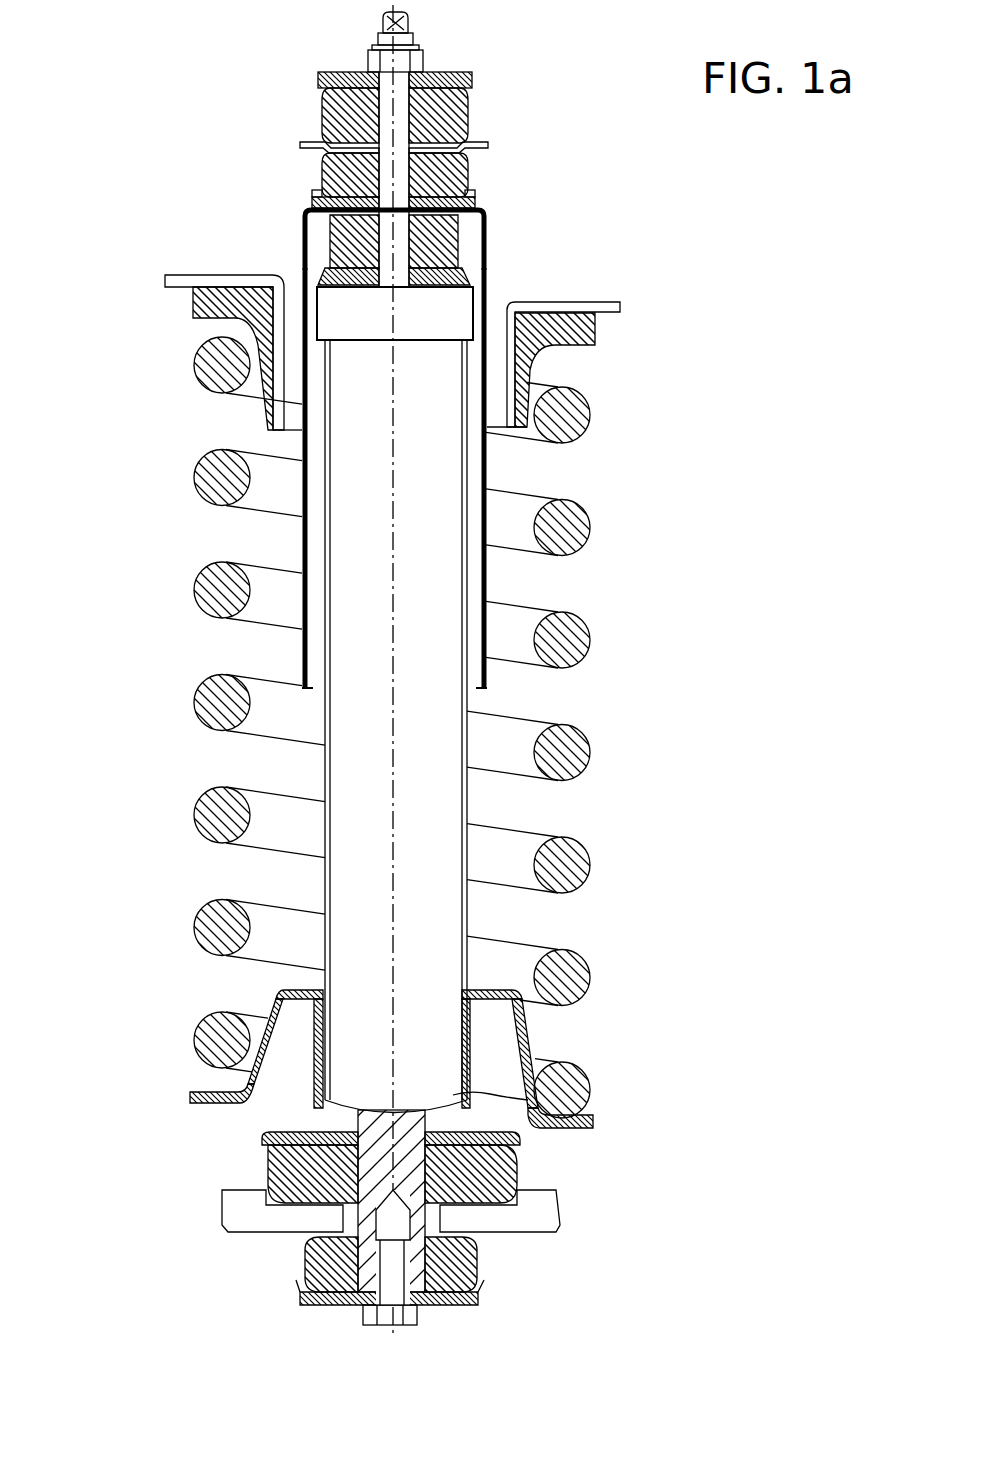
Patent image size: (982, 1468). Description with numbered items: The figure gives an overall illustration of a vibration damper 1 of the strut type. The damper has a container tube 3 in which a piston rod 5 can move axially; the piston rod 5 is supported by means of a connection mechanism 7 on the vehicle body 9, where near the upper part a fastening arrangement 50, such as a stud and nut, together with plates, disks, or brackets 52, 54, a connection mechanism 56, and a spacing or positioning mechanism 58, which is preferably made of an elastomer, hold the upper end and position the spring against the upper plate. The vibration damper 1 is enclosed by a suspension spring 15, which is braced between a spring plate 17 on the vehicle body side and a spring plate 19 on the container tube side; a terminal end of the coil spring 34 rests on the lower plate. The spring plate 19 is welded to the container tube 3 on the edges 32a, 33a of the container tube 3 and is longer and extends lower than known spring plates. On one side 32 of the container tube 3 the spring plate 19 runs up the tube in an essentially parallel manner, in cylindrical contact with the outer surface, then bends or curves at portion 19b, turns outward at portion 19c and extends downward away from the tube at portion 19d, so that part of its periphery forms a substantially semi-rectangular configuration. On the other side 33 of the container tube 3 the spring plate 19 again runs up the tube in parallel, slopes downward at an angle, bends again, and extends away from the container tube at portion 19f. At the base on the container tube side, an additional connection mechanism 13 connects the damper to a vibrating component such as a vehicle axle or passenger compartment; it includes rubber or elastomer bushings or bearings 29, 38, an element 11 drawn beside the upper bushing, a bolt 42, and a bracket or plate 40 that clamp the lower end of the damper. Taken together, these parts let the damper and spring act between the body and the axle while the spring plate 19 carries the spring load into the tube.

The vibration damper 1 is at (120, 1080).
The container tube 3 is at (465, 908).
The piston rod 5 is at (400, 240).
The connection mechanism 7 is at (460, 110).
The vehicle body 9 is at (490, 148).
The lower rubber bushing 11 is at (520, 1148).
The additional connection mechanism 13 is at (512, 1245).
The suspension spring 15 is at (565, 757).
The spring plate 17 is at (600, 302).
The spring plate 19 is at (580, 1125).
The bend portion of spring plate 19b is at (525, 1030).
The outward-extending portion of spring plate 19c is at (290, 992).
The downward-extending portion of spring plate 19d is at (535, 1132).
The outward-extending portion of spring plate 19f is at (255, 1100).
The rubber or elastomer bushing 29 is at (540, 1172).
The side of container tube 32 is at (445, 978).
The edge of container tube 32a is at (530, 1100).
The side of container tube 33 is at (320, 977).
The edge of container tube 33a is at (340, 1110).
The coil spring 34 is at (588, 1068).
The rubber or elastomer bushing 38 is at (300, 1258).
The bracket or plate 40 is at (445, 1300).
The bolt 42 is at (372, 1322).
The fastening arrangement 50 is at (420, 58).
The plate, disk, or bracket 52 is at (472, 78).
The plate, disk, or bracket 54 is at (312, 200).
The connection mechanism 56 is at (305, 150).
The spacing or positioning mechanism 58 is at (195, 300).